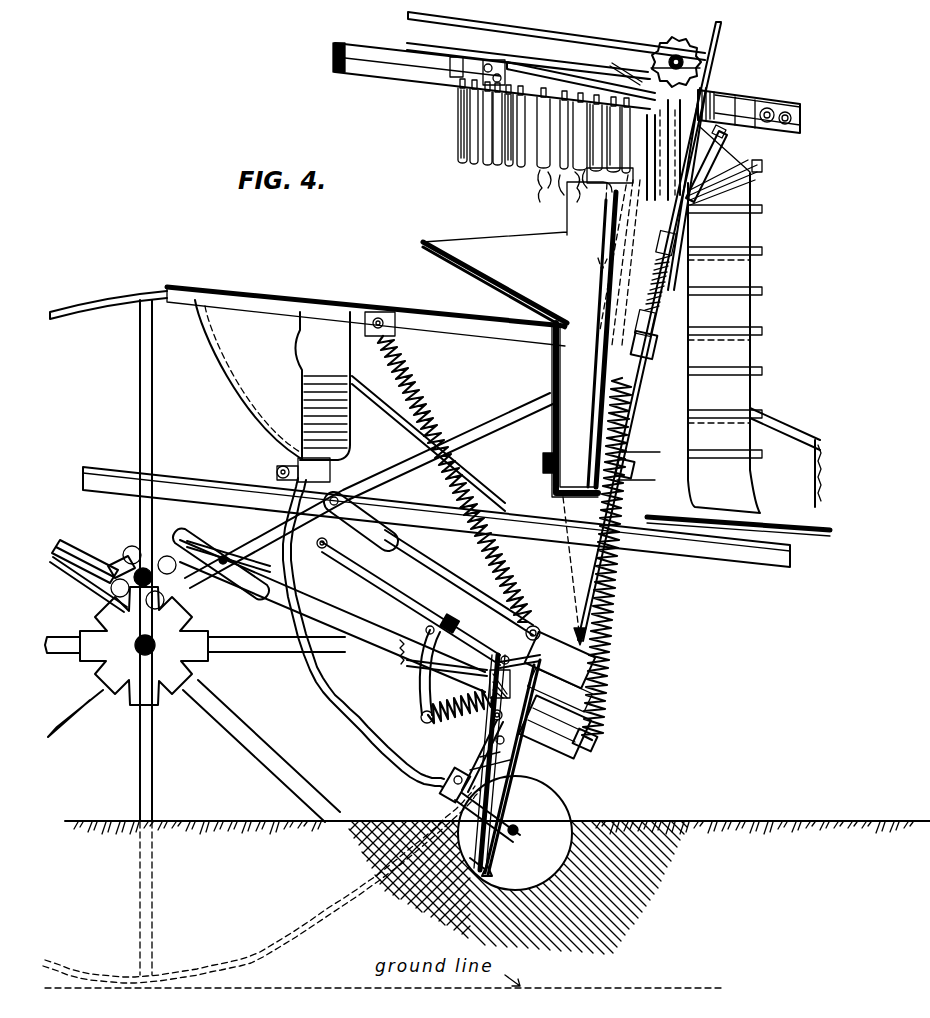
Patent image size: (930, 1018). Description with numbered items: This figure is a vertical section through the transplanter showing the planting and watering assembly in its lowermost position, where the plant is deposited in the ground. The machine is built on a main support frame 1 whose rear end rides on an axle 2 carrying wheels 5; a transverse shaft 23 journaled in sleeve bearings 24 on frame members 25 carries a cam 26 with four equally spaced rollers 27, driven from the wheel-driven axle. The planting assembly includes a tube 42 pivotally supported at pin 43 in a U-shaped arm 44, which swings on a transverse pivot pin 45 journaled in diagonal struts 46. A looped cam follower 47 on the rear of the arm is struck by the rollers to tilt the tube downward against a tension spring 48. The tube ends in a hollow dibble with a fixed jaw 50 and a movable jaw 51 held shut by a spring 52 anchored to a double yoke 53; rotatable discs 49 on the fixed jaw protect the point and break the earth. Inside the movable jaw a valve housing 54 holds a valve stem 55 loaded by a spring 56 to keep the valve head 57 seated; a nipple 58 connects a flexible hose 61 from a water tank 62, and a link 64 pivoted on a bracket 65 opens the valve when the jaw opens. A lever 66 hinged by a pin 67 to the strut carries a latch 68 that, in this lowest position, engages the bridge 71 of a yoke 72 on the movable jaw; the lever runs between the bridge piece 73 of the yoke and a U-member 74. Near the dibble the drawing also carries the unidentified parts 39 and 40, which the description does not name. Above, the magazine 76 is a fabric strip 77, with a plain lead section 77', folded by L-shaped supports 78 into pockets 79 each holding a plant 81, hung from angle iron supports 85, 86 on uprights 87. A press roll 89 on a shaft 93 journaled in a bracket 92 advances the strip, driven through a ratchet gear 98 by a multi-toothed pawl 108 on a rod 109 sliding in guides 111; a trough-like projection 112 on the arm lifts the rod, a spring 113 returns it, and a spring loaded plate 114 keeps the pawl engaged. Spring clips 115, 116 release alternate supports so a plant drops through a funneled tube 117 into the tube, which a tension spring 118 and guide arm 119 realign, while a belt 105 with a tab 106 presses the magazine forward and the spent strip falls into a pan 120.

The main support frame 1 is at (193, 474).
The axle 2 is at (134, 644).
The wheels 5 is at (88, 306).
The transverse shaft 23 is at (110, 583).
The sleeve bearings 24 is at (142, 632).
The frame members 25 is at (84, 560).
The cam 26 is at (143, 568).
The cam rollers 27 is at (122, 558).
The bracket 39 is at (490, 689).
The plate 40 is at (508, 686).
The planting tube 42 is at (547, 642).
The pivot pin 43 is at (540, 692).
The U-shaped arm 44 is at (385, 650).
The transverse pivot pin 45 is at (223, 556).
The diagonal struts 46 is at (500, 421).
The looped cam follower 47 is at (180, 540).
The tension spring 48 is at (612, 626).
The discs 49 is at (570, 818).
The fixed jaw 50 is at (494, 869).
The movable jaw 51 is at (470, 862).
The spring 52 is at (452, 726).
The double yoke 53 is at (420, 716).
The valve housing 54 is at (533, 783).
The valve stem 55 is at (480, 758).
The spring 56 is at (520, 801).
The valve head 57 is at (515, 838).
The nipple 58 is at (455, 802).
The flexible hose 61 is at (357, 725).
The water tank 62 is at (262, 392).
The link 64 is at (495, 745).
The bracket 65 is at (528, 723).
The lever 66 is at (385, 571).
The pin 67 is at (322, 549).
The latch 68 is at (470, 668).
The bridge 71 is at (503, 666).
The yoke 72 is at (492, 722).
The bridge piece 73 is at (426, 631).
The U-member 74 is at (448, 622).
The plant magazine 76 is at (486, 169).
The strip 77 is at (596, 138).
The lead section 77' is at (738, 343).
The L-shaped support members 78 is at (487, 66).
The pockets 79 is at (503, 166).
The plant 81 is at (567, 150).
The angle iron support 85 is at (342, 55).
The angle iron support 86 is at (390, 62).
The uprights 87 is at (640, 128).
The press roll 89 is at (694, 175).
The bracket 92 is at (662, 184).
The shaft 93 is at (695, 195).
The ratchet gear 98 is at (668, 42).
The belt 105 is at (548, 62).
The tab 106 is at (452, 76).
The multi-toothed pawl 108 is at (704, 85).
The rod 109 is at (721, 26).
The guides 111 is at (656, 346).
The trough-like projection 112 is at (570, 745).
The spring 113 is at (668, 270).
The spring loaded plate 114 is at (712, 96).
The spring clip 115 is at (622, 80).
The spring clip 116 is at (583, 85).
The funneled tube 117 is at (465, 247).
The tension spring 118 is at (499, 571).
The guide arm 119 is at (410, 556).
The pan 120 is at (768, 442).